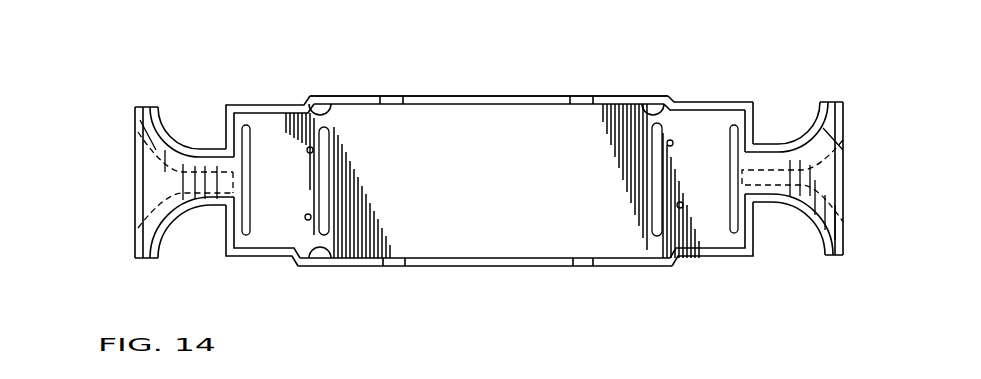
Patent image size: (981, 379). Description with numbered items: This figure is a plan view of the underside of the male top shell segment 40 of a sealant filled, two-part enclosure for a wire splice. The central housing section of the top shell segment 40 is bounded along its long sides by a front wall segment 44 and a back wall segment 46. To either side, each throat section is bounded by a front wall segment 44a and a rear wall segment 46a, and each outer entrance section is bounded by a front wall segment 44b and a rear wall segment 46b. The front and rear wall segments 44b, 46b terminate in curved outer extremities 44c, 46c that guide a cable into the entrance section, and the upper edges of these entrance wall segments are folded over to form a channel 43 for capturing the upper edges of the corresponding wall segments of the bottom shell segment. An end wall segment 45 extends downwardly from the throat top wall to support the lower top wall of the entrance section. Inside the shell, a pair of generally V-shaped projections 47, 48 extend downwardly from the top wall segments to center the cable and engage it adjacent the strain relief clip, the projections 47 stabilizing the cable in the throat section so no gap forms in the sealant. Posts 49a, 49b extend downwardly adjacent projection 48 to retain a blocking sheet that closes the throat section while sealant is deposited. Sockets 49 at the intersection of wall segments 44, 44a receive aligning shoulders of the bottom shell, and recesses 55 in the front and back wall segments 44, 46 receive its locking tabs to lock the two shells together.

The top shell segment 40 is at (506, 92).
The channel 43 is at (141, 125).
The front wall segment 44 is at (372, 95).
The front wall segment 44a is at (280, 106).
The front wall segment 44b is at (204, 150).
The curved outer extremity 44c is at (845, 104).
The end wall segment 45 is at (757, 128).
The back wall segment 46 is at (478, 264).
The rear wall segment 46a is at (708, 256).
The rear wall segment 46b is at (184, 216).
The curved outer extremity 46c is at (845, 216).
The V-shaped projection 47 is at (248, 173).
The V-shaped projection 48 is at (330, 157).
The socket 49 is at (319, 103).
The post 49a is at (304, 217).
The post 49b is at (306, 150).
The recess 55 is at (394, 101).